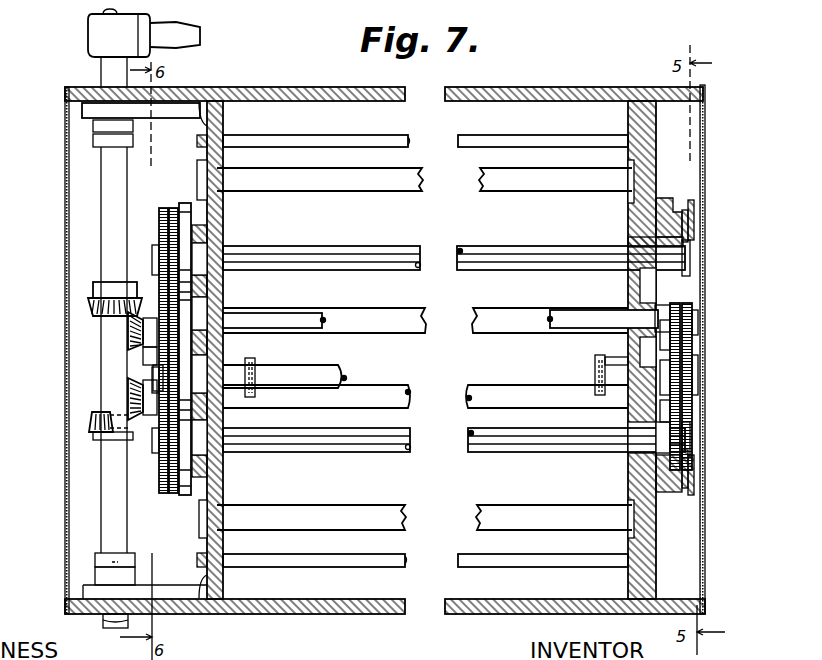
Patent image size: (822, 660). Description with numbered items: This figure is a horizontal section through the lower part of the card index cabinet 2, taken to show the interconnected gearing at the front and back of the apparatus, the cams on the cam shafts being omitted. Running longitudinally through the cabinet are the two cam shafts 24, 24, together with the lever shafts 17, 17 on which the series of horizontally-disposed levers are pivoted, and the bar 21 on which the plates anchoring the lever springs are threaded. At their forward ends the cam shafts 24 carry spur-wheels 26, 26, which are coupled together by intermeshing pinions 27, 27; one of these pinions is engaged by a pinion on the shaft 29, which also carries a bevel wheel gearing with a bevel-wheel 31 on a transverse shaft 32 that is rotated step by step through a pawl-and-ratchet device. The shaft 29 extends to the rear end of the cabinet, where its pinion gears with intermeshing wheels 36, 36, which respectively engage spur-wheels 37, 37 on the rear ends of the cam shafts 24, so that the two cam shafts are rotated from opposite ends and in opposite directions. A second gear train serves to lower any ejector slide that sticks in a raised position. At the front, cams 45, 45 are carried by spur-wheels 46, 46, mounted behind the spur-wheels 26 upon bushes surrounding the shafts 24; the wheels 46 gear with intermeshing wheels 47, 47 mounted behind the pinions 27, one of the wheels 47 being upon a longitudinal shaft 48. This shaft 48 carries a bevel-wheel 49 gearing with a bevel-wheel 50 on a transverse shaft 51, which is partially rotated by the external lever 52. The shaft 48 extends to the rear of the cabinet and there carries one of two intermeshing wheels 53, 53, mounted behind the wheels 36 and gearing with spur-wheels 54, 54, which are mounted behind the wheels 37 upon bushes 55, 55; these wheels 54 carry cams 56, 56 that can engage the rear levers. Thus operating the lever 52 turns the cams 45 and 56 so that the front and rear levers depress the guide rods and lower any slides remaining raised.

The cabinet 2 is at (453, 100).
The shaft 17 is at (325, 328).
The bar 21 is at (485, 176).
The cam shaft 24 is at (468, 258).
The spur-wheel 26 is at (163, 212).
The pinion 27 is at (162, 366).
The shaft 29 is at (468, 396).
The bevel-wheel 31 is at (95, 423).
The transverse shaft 32 is at (133, 393).
The intermeshing wheel 36 is at (696, 322).
The spur-wheel 37 is at (694, 222).
The cam 45 is at (190, 200).
The spur-wheel 46 is at (174, 206).
The intermeshing wheel 47 is at (200, 322).
The longitudinal shaft 48 is at (473, 316).
The bevel-wheel 49 is at (130, 322).
The bevel-wheel 50 is at (93, 306).
The transverse shaft 51 is at (108, 160).
The lever 52 is at (92, 33).
The intermeshing wheel 53 is at (628, 318).
The spur-wheel 54 is at (688, 206).
The bush 55 is at (628, 243).
The cam 56 is at (663, 200).